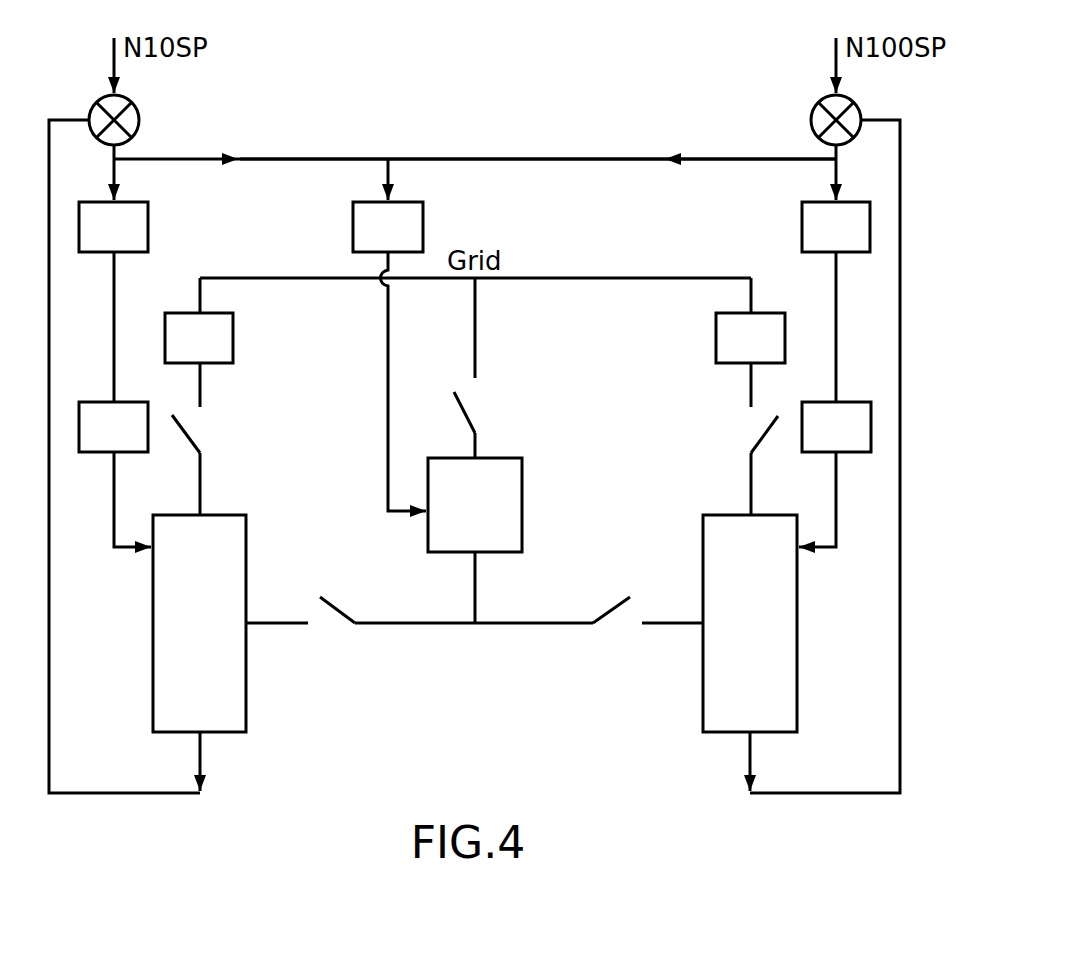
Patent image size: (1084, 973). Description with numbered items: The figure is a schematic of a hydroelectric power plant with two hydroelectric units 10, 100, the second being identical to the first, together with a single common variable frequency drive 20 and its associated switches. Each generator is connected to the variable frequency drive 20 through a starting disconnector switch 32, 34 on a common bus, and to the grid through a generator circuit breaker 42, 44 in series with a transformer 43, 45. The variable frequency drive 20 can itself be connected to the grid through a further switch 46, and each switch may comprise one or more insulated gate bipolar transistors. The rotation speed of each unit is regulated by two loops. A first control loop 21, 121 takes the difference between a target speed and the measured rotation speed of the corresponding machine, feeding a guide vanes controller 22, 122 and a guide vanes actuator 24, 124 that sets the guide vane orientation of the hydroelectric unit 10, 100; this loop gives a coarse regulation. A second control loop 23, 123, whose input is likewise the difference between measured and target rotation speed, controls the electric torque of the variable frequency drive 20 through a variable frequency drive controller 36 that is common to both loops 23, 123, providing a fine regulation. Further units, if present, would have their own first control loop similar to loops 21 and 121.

The hydro-electric unit 10 is at (184, 640).
The variable frequency drive 20 is at (459, 519).
The first control loop 21 is at (73, 812).
The guide vanes controller 22 is at (99, 242).
The second control loop 23 is at (321, 146).
The guide vanes actuator 24 is at (99, 442).
The switch 32 is at (325, 615).
The switch 34 is at (622, 615).
The variable frequency drive controller 36 is at (373, 242).
The switch 42 is at (193, 427).
The transformer 43 is at (184, 353).
The switch 44 is at (748, 427).
The transformer 45 is at (735, 353).
The switch 46 is at (477, 402).
The hydroelectric unit 100 is at (728, 640).
The first control loop 121 is at (793, 812).
The guide vanes controller 122 is at (814, 242).
The second control loop 123 is at (598, 146).
The guide vanes actuator 124 is at (814, 442).